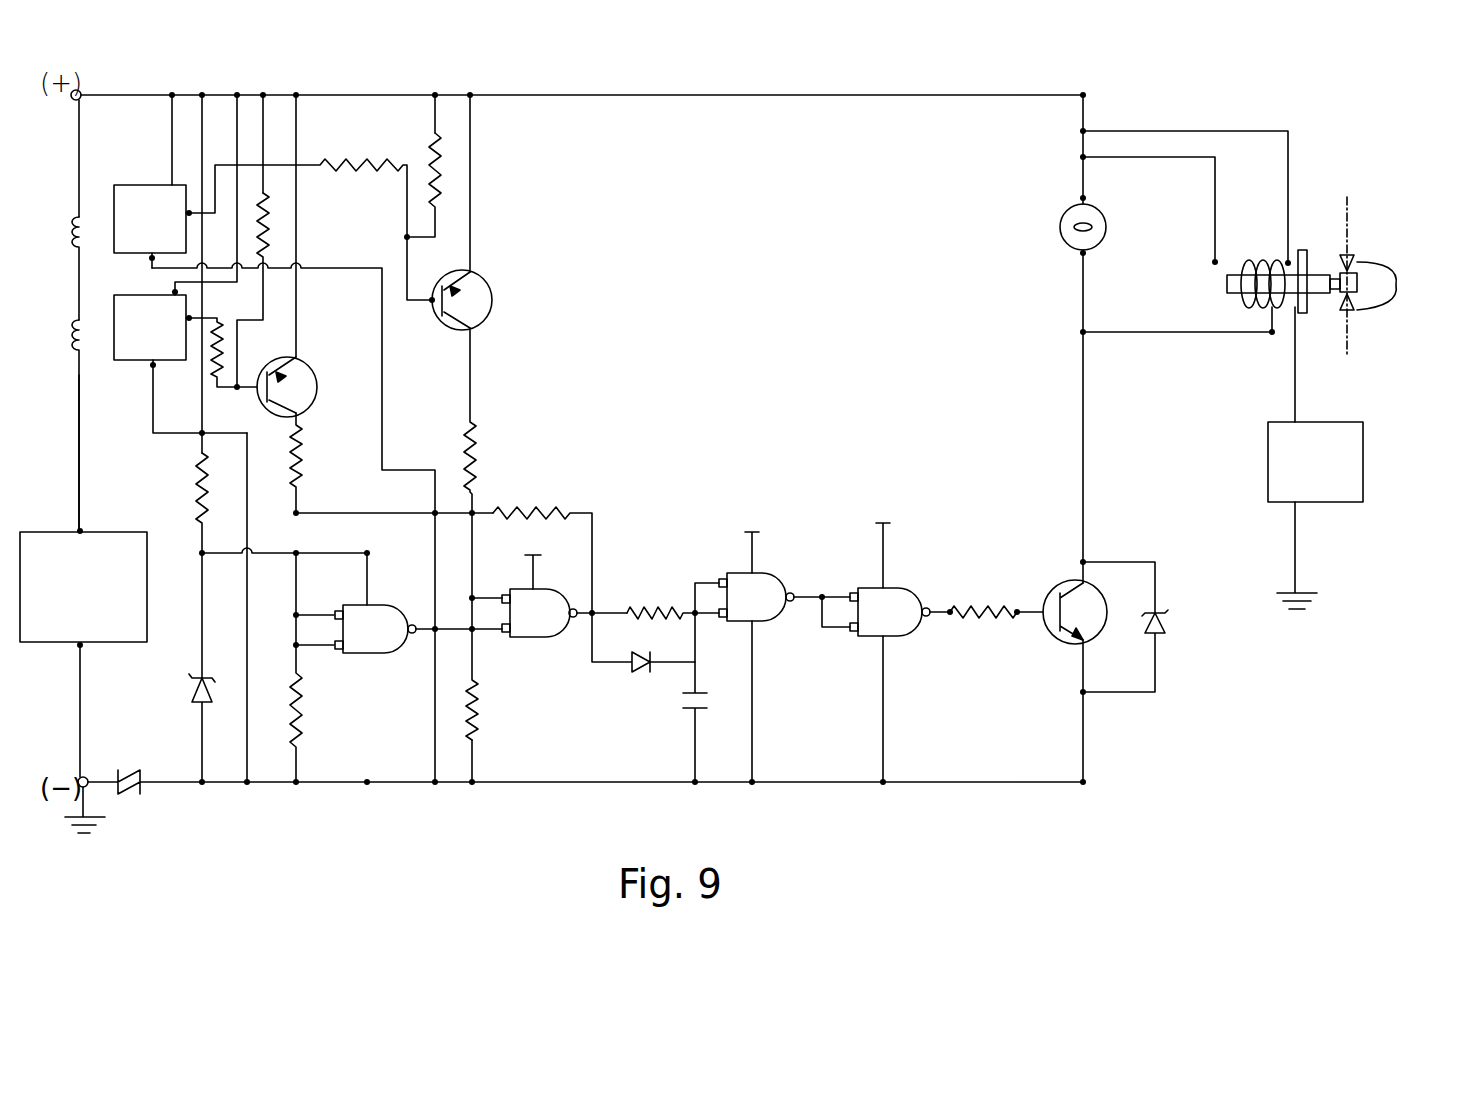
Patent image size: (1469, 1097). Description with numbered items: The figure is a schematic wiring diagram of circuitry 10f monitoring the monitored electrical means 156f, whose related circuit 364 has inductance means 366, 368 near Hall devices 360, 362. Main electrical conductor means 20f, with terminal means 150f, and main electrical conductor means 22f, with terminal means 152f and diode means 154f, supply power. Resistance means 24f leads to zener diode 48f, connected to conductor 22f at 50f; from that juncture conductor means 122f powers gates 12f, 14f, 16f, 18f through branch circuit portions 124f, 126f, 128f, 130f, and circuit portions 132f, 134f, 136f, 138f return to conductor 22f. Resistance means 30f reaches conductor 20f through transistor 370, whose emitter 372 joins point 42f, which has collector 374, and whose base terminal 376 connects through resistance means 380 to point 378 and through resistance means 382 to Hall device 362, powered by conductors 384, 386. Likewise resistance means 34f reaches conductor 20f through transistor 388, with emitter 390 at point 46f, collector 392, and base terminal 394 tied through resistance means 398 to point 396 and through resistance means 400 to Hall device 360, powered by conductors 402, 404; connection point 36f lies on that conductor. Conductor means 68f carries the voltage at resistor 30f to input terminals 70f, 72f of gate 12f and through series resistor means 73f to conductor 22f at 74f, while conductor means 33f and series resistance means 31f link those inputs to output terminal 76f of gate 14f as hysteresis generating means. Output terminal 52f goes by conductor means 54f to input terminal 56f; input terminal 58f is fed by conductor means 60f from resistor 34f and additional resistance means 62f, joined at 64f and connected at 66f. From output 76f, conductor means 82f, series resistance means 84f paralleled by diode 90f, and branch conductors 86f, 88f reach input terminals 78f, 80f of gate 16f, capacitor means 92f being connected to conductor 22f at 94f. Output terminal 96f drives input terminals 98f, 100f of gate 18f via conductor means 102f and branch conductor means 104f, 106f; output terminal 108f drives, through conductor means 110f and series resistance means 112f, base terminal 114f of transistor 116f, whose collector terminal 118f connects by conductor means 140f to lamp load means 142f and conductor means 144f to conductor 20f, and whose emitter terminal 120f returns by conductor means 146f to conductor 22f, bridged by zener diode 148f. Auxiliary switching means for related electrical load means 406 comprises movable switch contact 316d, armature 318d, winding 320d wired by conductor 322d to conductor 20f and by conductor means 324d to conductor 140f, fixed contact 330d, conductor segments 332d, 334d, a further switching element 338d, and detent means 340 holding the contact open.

The circuitry 10f is at (1210, 733).
The integrated circuit gate 12f is at (384, 656).
The integrated circuit gate 14f is at (552, 644).
The integrated circuit gate 16f is at (761, 632).
The integrated circuit gate 18f is at (916, 626).
The main electrical conductor means 20f is at (722, 98).
The main electrical conductor means 22f is at (940, 786).
The resistance means 24f is at (198, 490).
The resistance means 30f is at (300, 450).
The series resistance means 31f is at (560, 512).
The conductor means 33f is at (600, 524).
The resistance means 34f is at (476, 456).
The connection point 36f is at (204, 94).
The connection point 42f is at (298, 94).
The connection point 46f is at (474, 94).
The zener diode 48f is at (195, 698).
The connection point 50f is at (205, 786).
The output terminal 52f is at (410, 622).
The conductor means 54f is at (472, 644).
The input terminal 56f is at (506, 640).
The input terminal 58f is at (496, 594).
The conductor means 60f is at (470, 584).
The additional resistance means 62f is at (478, 702).
The connection point 64f is at (472, 604).
The connection point 66f is at (476, 786).
The conductor means 68f is at (292, 676).
The input terminal 70f is at (330, 612).
The input terminal 72f is at (336, 656).
The series resistor means 73f is at (302, 718).
The connection point 74f is at (300, 786).
The output terminal 76f is at (578, 608).
The input terminal 78f is at (738, 540).
The input terminal 80f is at (710, 620).
The conductor means 82f is at (640, 608).
The series resistance means 84f is at (666, 644).
The branch conductor 86f is at (702, 576).
The branch conductor 88f is at (702, 620).
The diode 90f is at (650, 676).
The capacitor means 92f is at (696, 718).
The connection point 94f is at (692, 786).
The output terminal 96f is at (796, 590).
The input terminal 98f is at (872, 570).
The input terminal 100f is at (854, 640).
The conductor means 102f is at (822, 600).
The branch conductor means 104f is at (832, 594).
The branch conductor means 106f is at (846, 630).
The output terminal 108f is at (936, 606).
The conductor means 110f is at (952, 606).
The series resistance means 112f is at (984, 606).
The base terminal 114f is at (1048, 622).
The transistor 116f is at (1096, 628).
The collector terminal 118f is at (1064, 590).
The emitter terminal 120f is at (1064, 654).
The conductor means 122f is at (314, 552).
The branch circuit portion 124f is at (380, 566).
The branch circuit portion 126f is at (536, 580).
The branch circuit portion 128f is at (758, 538).
The branch circuit portion 130f is at (886, 542).
The circuit portion 132f is at (434, 732).
The circuit portion 134f is at (476, 760).
The circuit portion 136f is at (756, 746).
The circuit portion 138f is at (888, 744).
The conductor means 140f is at (1086, 548).
The electrical load means 142f is at (1056, 242).
The conductor means 144f is at (1066, 196).
The conductor means 146f is at (1086, 746).
The zener diode 148f is at (1164, 632).
The terminal means 150f is at (82, 92).
The terminal means 152f is at (90, 777).
The diode means 154f is at (130, 796).
The monitored electrical means 156f is at (52, 648).
The movable switch contact 316d is at (1306, 250).
The armature 318d is at (1226, 284).
The winding or coil 320d is at (1244, 302).
The conductor 322d is at (1214, 198).
The conductor means 324d is at (1158, 338).
The fixed contact 330d is at (1290, 312).
The conductor segment 332d is at (1292, 152).
The conductor segment 334d is at (1294, 394).
The plate 338d is at (1288, 262).
The detent means 340 is at (1396, 285).
The Hall device 360 is at (124, 185).
The Hall device 362 is at (132, 362).
The related circuit 364 is at (78, 382).
The inductance means 366 is at (62, 232).
The inductance means 368 is at (62, 334).
The transistor 370 is at (310, 373).
The emitter 372 is at (296, 350).
The collector 374 is at (302, 404).
The base terminal 376 is at (270, 418).
The connection point 378 is at (274, 84).
The resistance means 380 is at (270, 230).
The resistance means 382 is at (218, 372).
The conductor 384 is at (234, 152).
The conductor 386 is at (226, 640).
The transistor 388 is at (496, 308).
The emitter 390 is at (480, 284).
The collector 392 is at (476, 328).
The base terminal 394 is at (444, 322).
The connection point 396 is at (442, 92).
The resistance means 398 is at (420, 156).
The resistance means 400 is at (330, 165).
The conductor 402 is at (172, 128).
The conductor 404 is at (386, 420).
The electrical load means 406 is at (1275, 506).